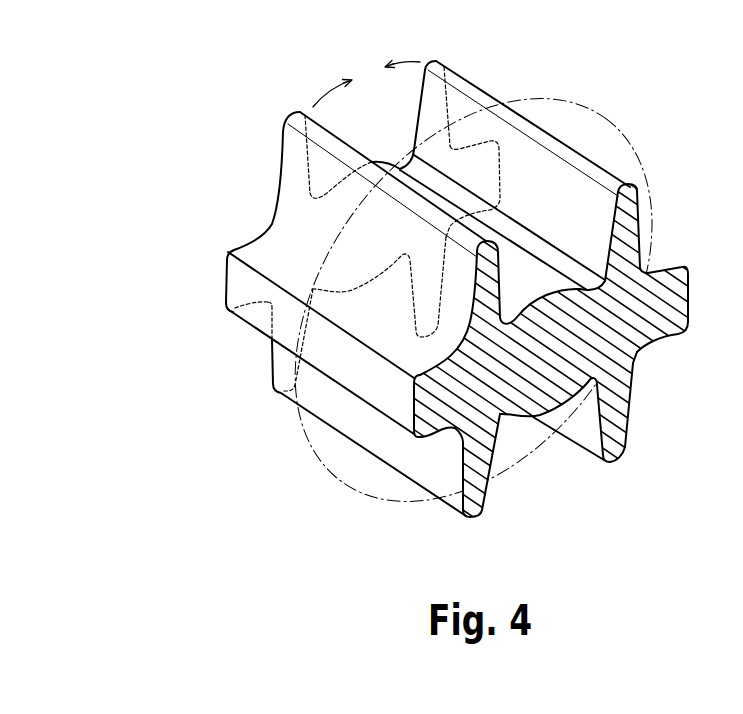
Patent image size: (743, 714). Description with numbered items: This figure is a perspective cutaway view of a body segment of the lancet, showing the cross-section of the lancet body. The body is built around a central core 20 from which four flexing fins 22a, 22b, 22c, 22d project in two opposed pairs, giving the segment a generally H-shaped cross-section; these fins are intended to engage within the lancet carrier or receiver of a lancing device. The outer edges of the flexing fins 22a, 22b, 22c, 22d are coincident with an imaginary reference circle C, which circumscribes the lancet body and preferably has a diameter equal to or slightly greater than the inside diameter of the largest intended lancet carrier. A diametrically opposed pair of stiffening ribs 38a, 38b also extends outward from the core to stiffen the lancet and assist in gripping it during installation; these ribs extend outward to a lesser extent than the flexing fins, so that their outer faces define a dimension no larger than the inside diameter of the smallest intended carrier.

The central core 20 is at (533, 397).
The flexing fin 22a is at (300, 124).
The flexing fin 22b is at (443, 64).
The flexing fin 22c is at (473, 516).
The flexing fin 22d is at (623, 450).
The stiffening rib 38a is at (236, 272).
The stiffening rib 38b is at (673, 312).
The reference circle C is at (332, 475).